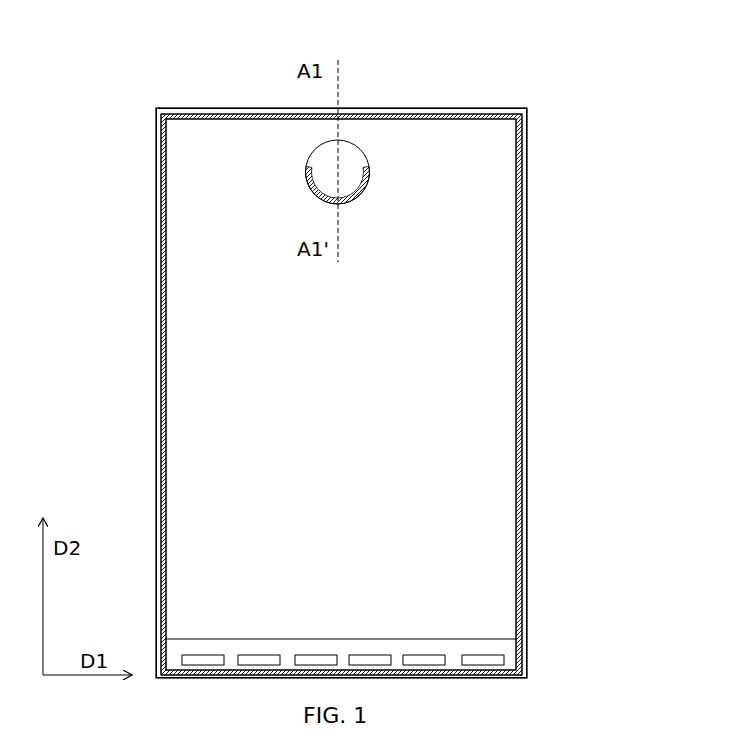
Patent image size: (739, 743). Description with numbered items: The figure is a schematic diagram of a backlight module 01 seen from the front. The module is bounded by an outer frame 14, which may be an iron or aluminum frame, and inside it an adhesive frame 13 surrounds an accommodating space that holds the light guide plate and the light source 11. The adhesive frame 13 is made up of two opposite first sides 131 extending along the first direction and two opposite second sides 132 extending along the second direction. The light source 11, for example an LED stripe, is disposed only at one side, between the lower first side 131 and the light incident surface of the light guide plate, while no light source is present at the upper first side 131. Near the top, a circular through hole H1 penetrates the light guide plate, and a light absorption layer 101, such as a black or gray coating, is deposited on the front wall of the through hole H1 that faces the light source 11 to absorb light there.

The backlight module 01 is at (206, 91).
The through hole H1 is at (350, 155).
The light absorption layer 101 is at (360, 196).
The outer frame 14 is at (528, 418).
The light source 11 is at (468, 645).
The adhesive frame 13 is at (429, 394).
The first sides 131 is at (475, 672).
The second sides 132 is at (518, 625).